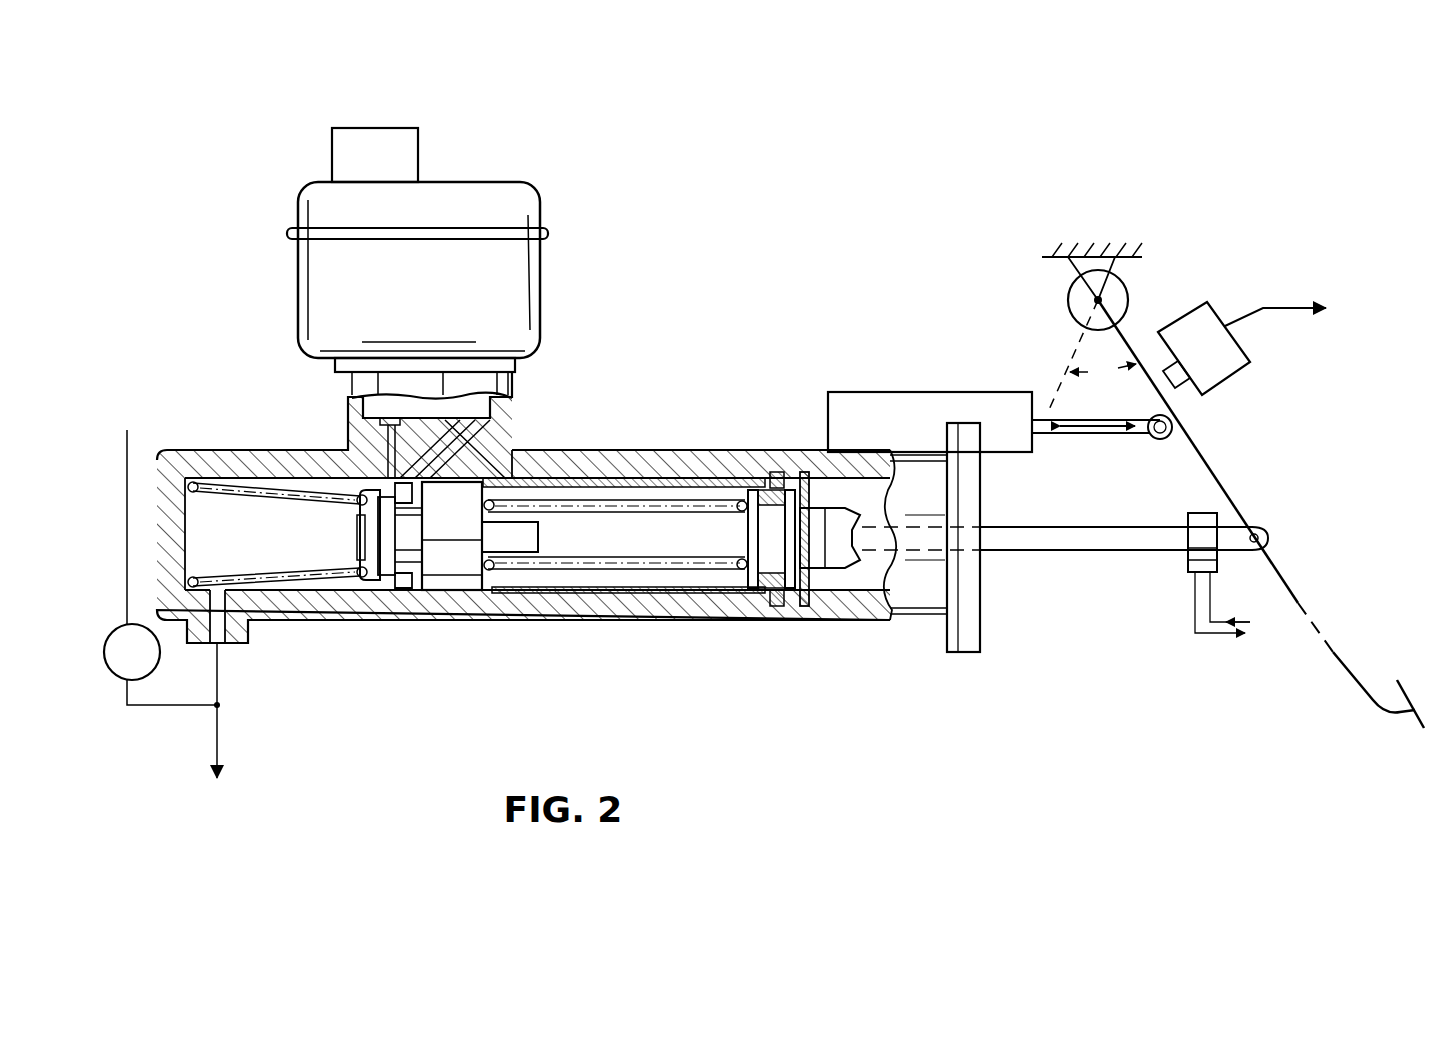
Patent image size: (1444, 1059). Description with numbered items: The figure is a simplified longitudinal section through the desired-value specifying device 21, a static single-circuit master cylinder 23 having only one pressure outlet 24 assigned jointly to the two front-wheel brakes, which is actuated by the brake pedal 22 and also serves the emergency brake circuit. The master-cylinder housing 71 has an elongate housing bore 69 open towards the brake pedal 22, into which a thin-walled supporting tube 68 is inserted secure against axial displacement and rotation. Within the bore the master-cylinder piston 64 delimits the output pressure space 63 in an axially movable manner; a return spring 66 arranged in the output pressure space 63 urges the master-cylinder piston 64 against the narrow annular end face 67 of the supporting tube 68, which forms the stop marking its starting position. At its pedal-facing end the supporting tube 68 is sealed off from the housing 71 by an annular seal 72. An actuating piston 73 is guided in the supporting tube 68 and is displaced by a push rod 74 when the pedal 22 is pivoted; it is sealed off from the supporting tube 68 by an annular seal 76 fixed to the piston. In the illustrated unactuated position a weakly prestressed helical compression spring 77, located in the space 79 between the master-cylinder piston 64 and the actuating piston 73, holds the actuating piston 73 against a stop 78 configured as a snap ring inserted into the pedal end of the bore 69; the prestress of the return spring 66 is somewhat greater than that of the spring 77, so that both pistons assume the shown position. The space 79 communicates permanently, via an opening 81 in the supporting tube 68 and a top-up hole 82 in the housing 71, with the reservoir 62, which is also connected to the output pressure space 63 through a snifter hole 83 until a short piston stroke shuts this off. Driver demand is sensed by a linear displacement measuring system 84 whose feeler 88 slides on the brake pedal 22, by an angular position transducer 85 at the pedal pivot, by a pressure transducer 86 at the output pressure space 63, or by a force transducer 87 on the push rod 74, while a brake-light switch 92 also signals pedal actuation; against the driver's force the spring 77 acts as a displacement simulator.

The desired-value specifying device 21 is at (838, 376).
The brake pedal 22 is at (1340, 676).
The master cylinder 23 is at (208, 446).
The pressure outlet 24 is at (222, 648).
The reservoir 62 is at (318, 298).
The output pressure space 63 is at (305, 555).
The master-cylinder piston 64 is at (447, 570).
The return spring 66 is at (268, 476).
The annular end face 67 is at (505, 582).
The supporting tube 68 is at (560, 594).
The housing bore 69 is at (585, 498).
The master-cylinder housing 71 is at (680, 466).
The annular seal 72 is at (776, 472).
The actuating piston 73 is at (802, 590).
The push rod 74 is at (1017, 535).
The annular seal 76 is at (755, 582).
The helical compression spring 77 is at (603, 575).
The stop 78 is at (815, 580).
The space 79 is at (660, 582).
The opening 81 is at (528, 468).
The top-up hole 82 is at (480, 455).
The snifter hole 83 is at (392, 470).
The linear displacement measuring system 84 is at (885, 406).
The angular position transducer 85 is at (1070, 305).
The pressure transducer 86 is at (110, 660).
The force transducer 87 is at (1197, 525).
The feeler 88 is at (1093, 434).
The brake-light switch 92 is at (1190, 318).